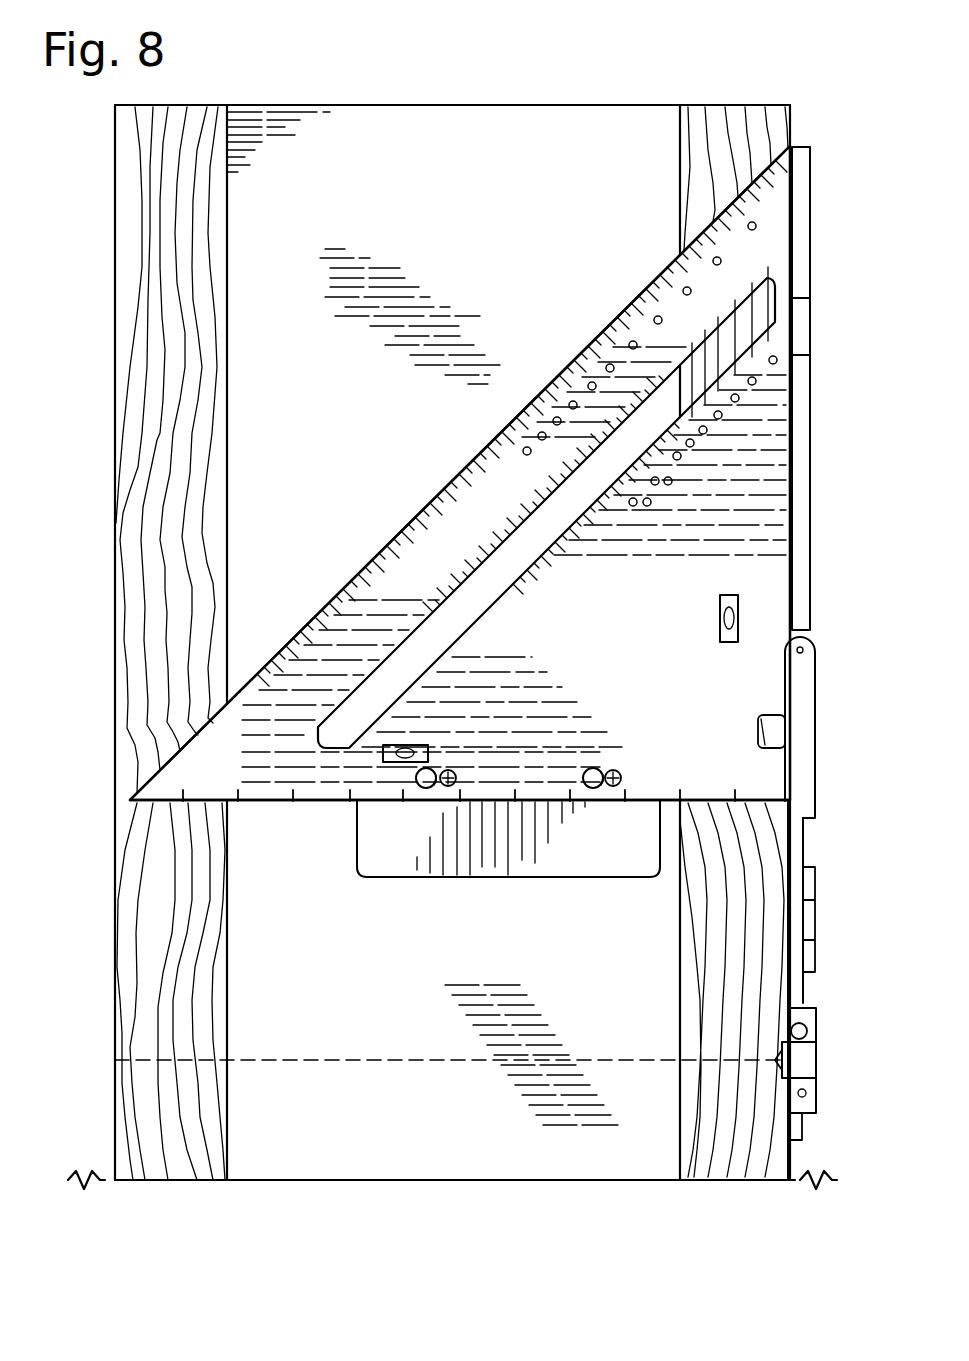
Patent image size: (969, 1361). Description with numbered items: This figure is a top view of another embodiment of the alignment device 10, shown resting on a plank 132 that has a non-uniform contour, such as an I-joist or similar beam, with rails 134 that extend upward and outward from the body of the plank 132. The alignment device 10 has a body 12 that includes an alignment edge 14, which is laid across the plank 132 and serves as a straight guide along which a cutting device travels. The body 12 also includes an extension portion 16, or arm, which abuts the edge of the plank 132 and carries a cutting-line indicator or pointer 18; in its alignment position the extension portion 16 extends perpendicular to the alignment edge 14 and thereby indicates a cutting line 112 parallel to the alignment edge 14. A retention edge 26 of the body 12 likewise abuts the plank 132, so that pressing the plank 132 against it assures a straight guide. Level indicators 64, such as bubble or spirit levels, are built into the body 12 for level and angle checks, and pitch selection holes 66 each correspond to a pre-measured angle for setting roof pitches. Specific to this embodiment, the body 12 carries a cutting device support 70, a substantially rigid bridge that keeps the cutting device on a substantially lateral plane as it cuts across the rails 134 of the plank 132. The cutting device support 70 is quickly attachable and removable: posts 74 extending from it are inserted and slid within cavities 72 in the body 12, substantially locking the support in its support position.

The alignment device 10 is at (460, 532).
The body 12 is at (416, 516).
The alignment edge 14 is at (280, 804).
The extension portion 16 is at (797, 977).
The cutting-line indicator 18 is at (812, 1057).
The retention edge 26 is at (803, 244).
The level indicator 64 is at (408, 747).
The pitch selection holes 66 is at (658, 314).
The cutting device support 70 is at (613, 862).
The cavities 72 is at (428, 770).
The posts 74 is at (445, 789).
The cutting line 112 is at (300, 1060).
The plank 132 is at (471, 209).
The rails 134 is at (183, 110).